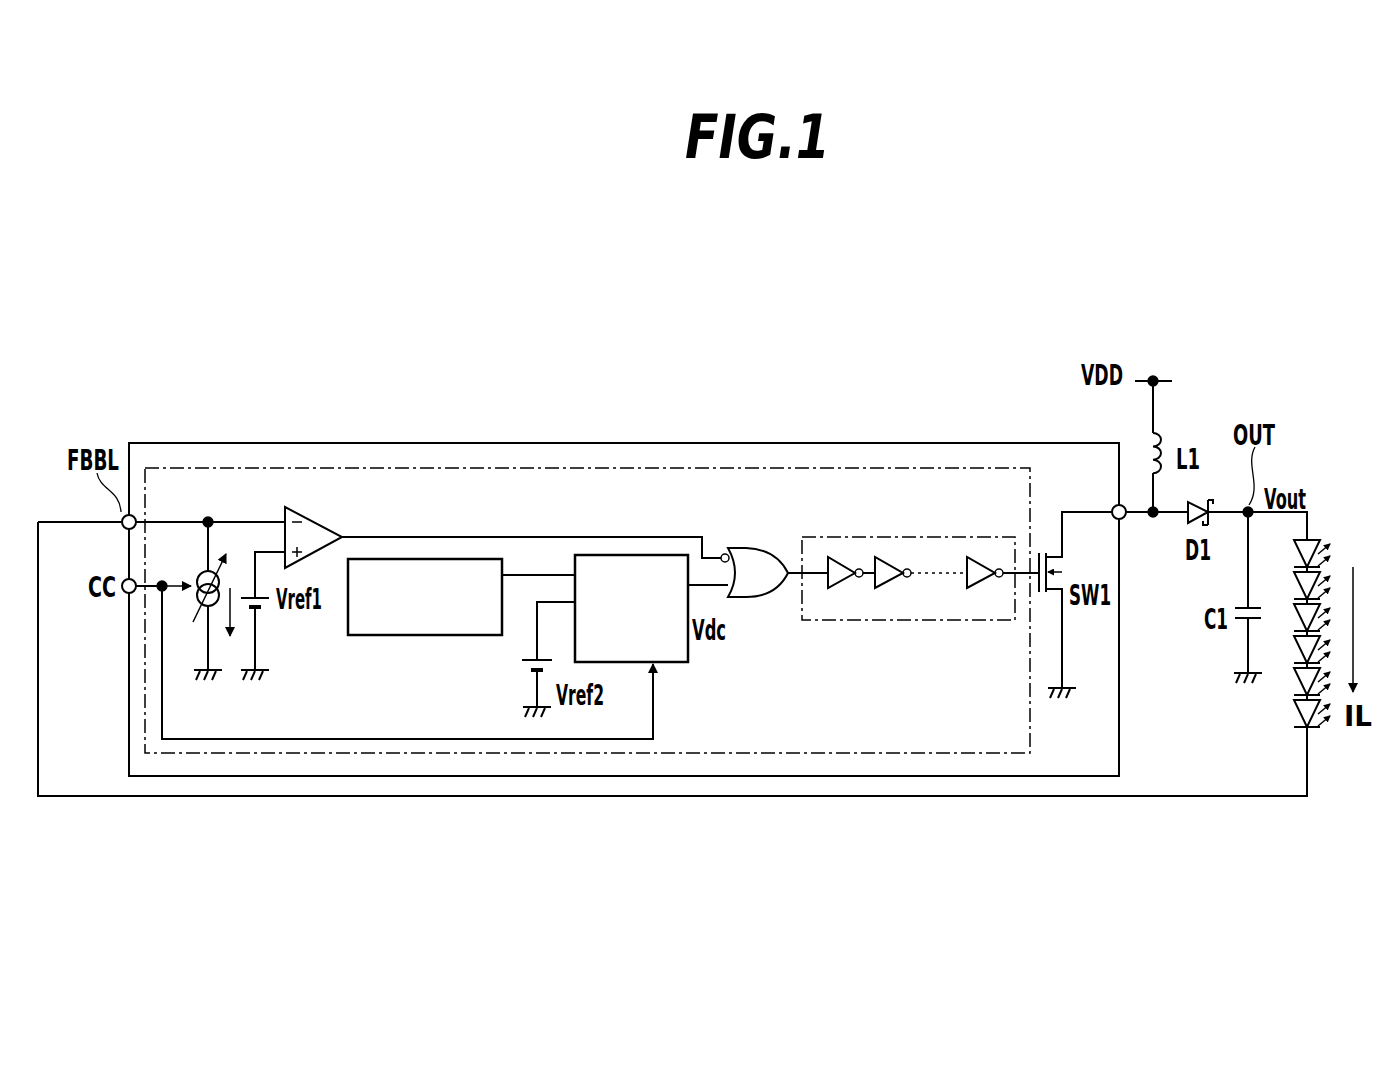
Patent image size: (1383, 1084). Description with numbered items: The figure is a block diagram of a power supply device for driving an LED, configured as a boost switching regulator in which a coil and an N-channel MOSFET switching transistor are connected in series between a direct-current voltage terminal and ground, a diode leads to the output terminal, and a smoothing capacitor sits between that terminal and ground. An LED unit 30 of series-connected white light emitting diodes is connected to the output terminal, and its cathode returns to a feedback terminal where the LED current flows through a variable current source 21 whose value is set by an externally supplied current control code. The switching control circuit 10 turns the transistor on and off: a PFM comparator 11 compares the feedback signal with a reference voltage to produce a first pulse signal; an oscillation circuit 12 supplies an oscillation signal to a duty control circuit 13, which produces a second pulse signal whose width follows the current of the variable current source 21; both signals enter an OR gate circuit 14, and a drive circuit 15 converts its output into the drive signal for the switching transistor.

The switching control circuit 10 is at (793, 467).
The PFM comparator 11 is at (320, 523).
The oscillation circuit 12 is at (363, 637).
The duty control circuit 13 is at (668, 664).
The OR gate circuit 14 is at (760, 548).
The drive circuit 15 is at (930, 621).
The variable current source 21 is at (196, 578).
The LED unit 30 is at (1332, 522).